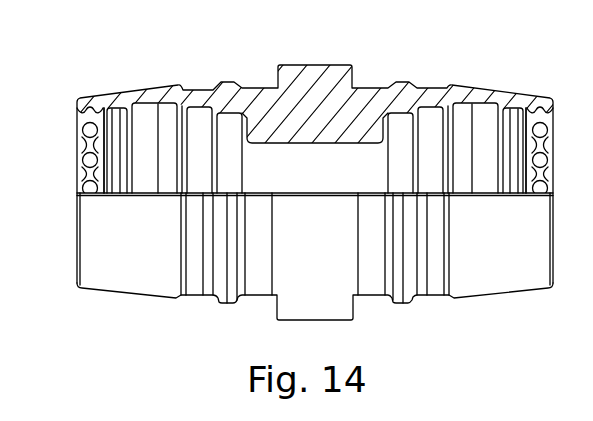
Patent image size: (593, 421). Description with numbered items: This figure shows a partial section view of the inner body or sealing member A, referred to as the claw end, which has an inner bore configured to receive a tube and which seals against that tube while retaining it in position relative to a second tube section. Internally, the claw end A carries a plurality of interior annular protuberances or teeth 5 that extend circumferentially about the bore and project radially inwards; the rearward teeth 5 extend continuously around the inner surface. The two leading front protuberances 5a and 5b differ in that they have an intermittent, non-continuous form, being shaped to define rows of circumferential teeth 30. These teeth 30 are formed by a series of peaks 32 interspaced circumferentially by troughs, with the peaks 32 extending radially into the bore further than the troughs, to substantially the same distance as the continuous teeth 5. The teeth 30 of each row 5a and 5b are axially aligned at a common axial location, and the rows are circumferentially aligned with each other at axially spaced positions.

The interior annular protuberances or teeth 5 is at (115, 102).
The leading front protuberance 5a is at (77, 129).
The leading front protuberance 5b is at (77, 160).
The peaks 32 is at (77, 178).
The rows of teeth 30 is at (76, 192).
The inner body or sealing member (claw end) A is at (477, 58).